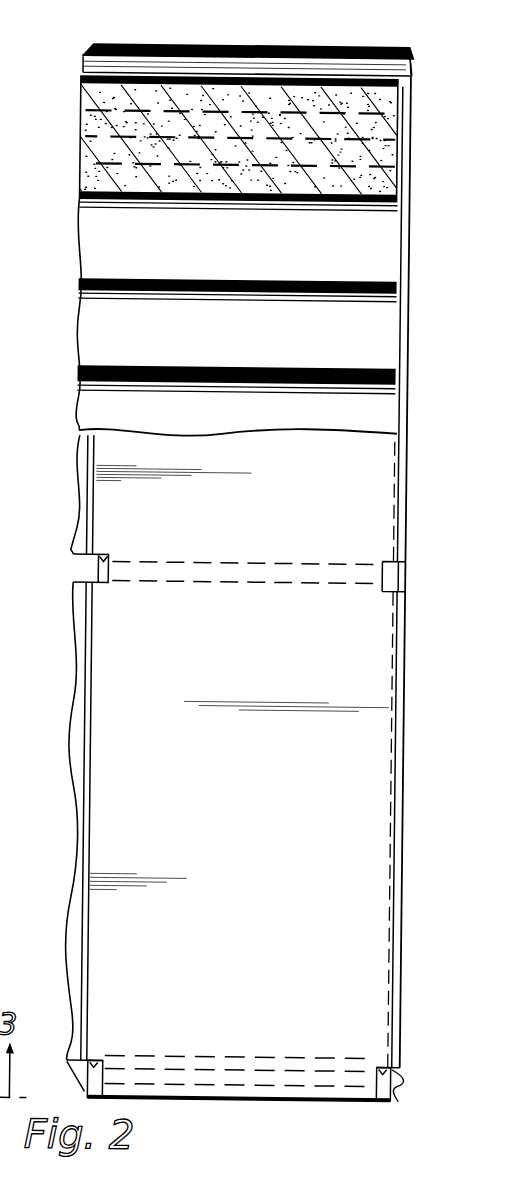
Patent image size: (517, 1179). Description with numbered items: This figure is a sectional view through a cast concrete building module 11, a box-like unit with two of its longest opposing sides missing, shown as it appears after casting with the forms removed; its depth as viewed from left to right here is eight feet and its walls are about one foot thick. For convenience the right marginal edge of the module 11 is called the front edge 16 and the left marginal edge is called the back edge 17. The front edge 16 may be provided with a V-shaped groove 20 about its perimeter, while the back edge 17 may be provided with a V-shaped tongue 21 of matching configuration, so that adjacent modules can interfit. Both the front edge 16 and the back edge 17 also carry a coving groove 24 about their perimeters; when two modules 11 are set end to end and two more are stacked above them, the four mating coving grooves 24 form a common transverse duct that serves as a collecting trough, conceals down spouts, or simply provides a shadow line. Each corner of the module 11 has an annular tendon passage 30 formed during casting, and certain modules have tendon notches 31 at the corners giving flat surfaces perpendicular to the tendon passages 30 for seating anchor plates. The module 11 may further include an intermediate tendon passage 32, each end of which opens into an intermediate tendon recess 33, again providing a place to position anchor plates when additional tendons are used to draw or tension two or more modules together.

The building module 11 is at (2, 482).
The front edge 16 is at (403, 799).
The back edge 17 is at (71, 767).
The V-shaped groove 20 is at (405, 69).
The V-shaped tongue 21 is at (76, 59).
The coving groove 24 is at (92, 48).
The tendon passage 30 is at (198, 1068).
The tendon notch 31 is at (100, 1060).
The intermediate tendon passage 32 is at (214, 584).
The intermediate tendon recess 33 is at (108, 555).